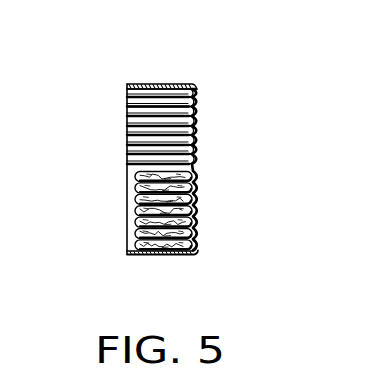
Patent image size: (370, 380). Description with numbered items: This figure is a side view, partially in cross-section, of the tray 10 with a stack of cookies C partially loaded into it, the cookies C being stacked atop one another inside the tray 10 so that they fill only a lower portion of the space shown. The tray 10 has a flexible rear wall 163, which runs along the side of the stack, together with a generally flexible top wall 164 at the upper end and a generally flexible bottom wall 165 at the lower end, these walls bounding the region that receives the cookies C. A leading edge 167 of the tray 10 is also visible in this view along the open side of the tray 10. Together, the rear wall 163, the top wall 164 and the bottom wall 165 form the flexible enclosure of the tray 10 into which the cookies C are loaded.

The tray 10 is at (121, 75).
The top wall 164 is at (191, 84).
The leading edge 167 is at (127, 124).
The rear wall 163 is at (198, 146).
The cookies C is at (134, 189).
The bottom wall 165 is at (171, 256).